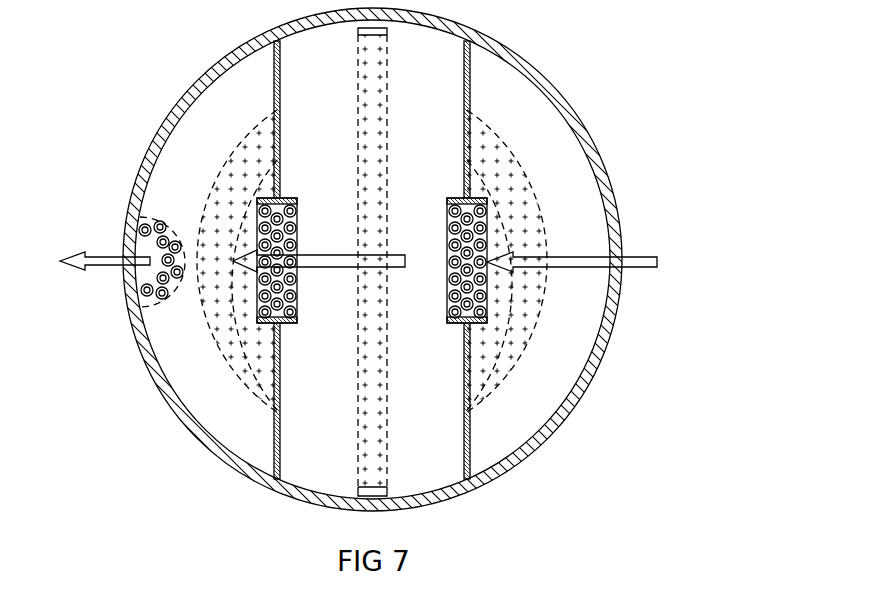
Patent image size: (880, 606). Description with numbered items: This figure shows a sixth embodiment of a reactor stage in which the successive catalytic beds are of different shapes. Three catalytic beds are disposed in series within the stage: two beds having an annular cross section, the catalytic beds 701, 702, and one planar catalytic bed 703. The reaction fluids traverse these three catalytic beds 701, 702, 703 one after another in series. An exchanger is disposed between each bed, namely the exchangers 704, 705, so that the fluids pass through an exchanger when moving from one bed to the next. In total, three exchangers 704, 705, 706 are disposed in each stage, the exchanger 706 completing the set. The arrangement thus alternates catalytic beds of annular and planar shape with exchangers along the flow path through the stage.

The catalytic bed 701 is at (520, 200).
The catalytic bed 702 is at (243, 163).
The planar catalytic bed 703 is at (372, 76).
The exchanger 704 is at (488, 283).
The exchanger 705 is at (256, 296).
The exchanger 706 is at (170, 230).